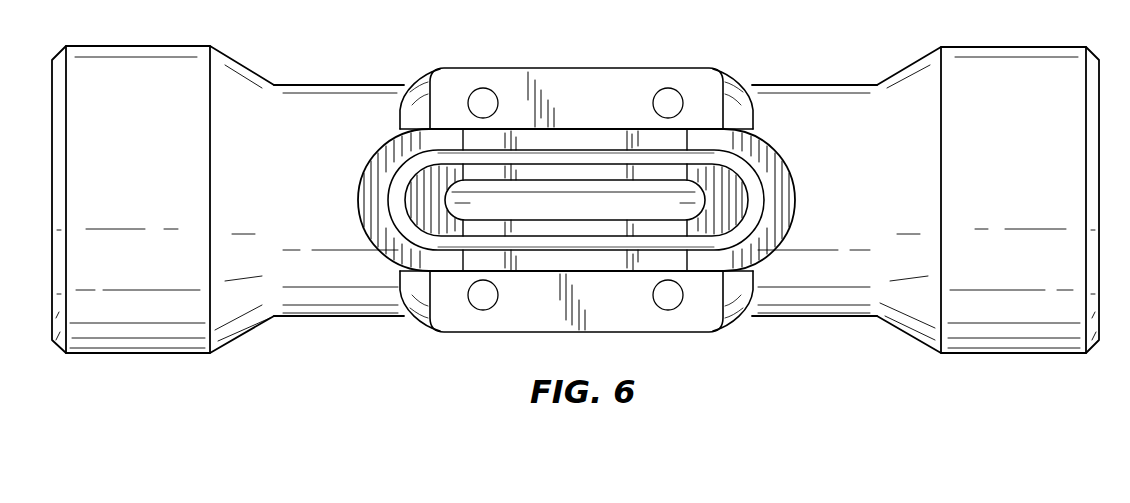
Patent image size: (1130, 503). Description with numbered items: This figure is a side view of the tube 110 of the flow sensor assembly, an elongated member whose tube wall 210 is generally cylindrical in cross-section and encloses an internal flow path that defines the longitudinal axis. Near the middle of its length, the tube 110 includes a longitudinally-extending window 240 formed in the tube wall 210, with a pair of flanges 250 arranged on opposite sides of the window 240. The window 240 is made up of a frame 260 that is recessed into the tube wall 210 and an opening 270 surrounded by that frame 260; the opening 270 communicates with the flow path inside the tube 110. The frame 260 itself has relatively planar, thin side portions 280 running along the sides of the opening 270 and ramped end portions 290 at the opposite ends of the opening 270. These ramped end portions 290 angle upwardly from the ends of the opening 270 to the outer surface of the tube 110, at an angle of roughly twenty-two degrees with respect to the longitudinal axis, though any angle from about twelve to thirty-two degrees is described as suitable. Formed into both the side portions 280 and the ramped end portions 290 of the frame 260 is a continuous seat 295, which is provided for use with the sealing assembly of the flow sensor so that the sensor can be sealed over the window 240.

The tube 110 is at (305, 53).
The tube wall 210 is at (322, 292).
The longitudinally-extending window 240 is at (744, 114).
The flanges 250 is at (510, 83).
The frame 260 is at (369, 152).
The opening 270 is at (603, 207).
The side portions 280 is at (572, 141).
The ramped end portions 290 is at (440, 128).
The continuous seat 295 is at (487, 158).